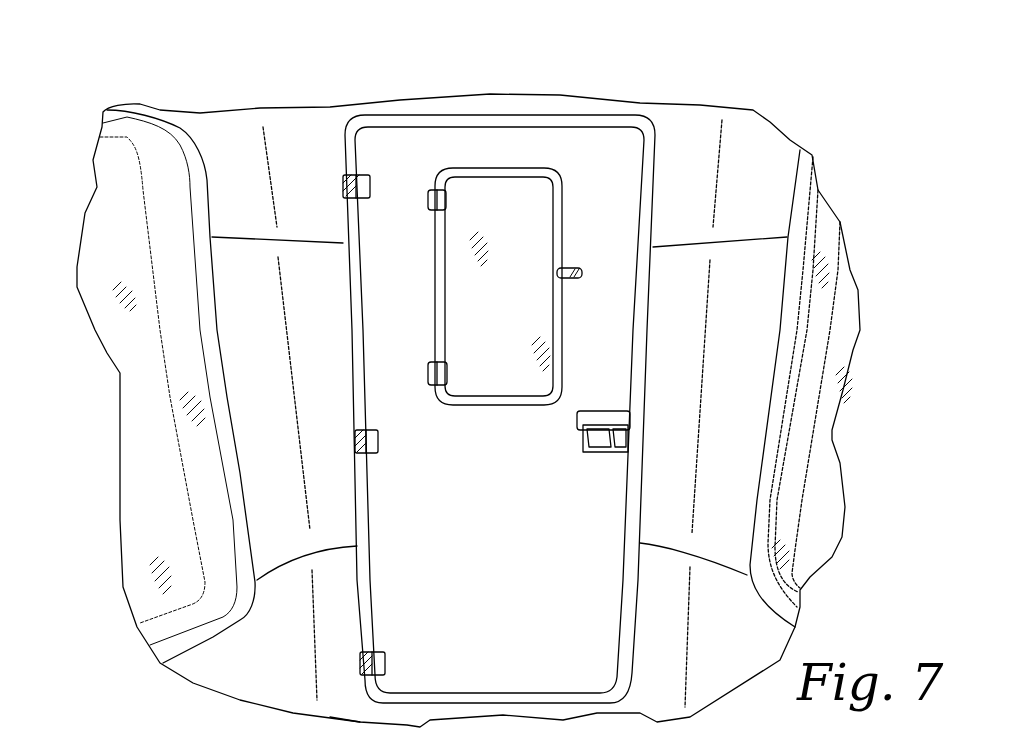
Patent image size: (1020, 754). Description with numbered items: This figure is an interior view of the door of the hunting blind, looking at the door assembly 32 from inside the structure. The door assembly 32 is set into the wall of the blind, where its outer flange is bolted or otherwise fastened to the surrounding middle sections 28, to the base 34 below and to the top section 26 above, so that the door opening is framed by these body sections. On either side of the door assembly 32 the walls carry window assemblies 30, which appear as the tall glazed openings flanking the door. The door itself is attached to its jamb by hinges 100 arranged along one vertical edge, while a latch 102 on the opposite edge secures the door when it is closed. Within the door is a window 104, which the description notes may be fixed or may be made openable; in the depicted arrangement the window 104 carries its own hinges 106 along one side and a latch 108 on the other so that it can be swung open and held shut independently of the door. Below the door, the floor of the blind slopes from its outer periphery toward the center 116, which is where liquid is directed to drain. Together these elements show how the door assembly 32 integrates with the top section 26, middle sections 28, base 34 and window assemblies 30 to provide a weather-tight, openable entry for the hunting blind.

The top section 26 is at (763, 145).
The middle sections 28 is at (730, 470).
The window assemblies 30 is at (832, 297).
The door assembly 32 is at (475, 147).
The base 34 is at (255, 672).
The hinges 100 is at (343, 178).
The latch 102 is at (578, 430).
The window 104 is at (552, 187).
The hinges 106 is at (430, 190).
The latch 108 is at (577, 270).
The center 116 is at (410, 735).